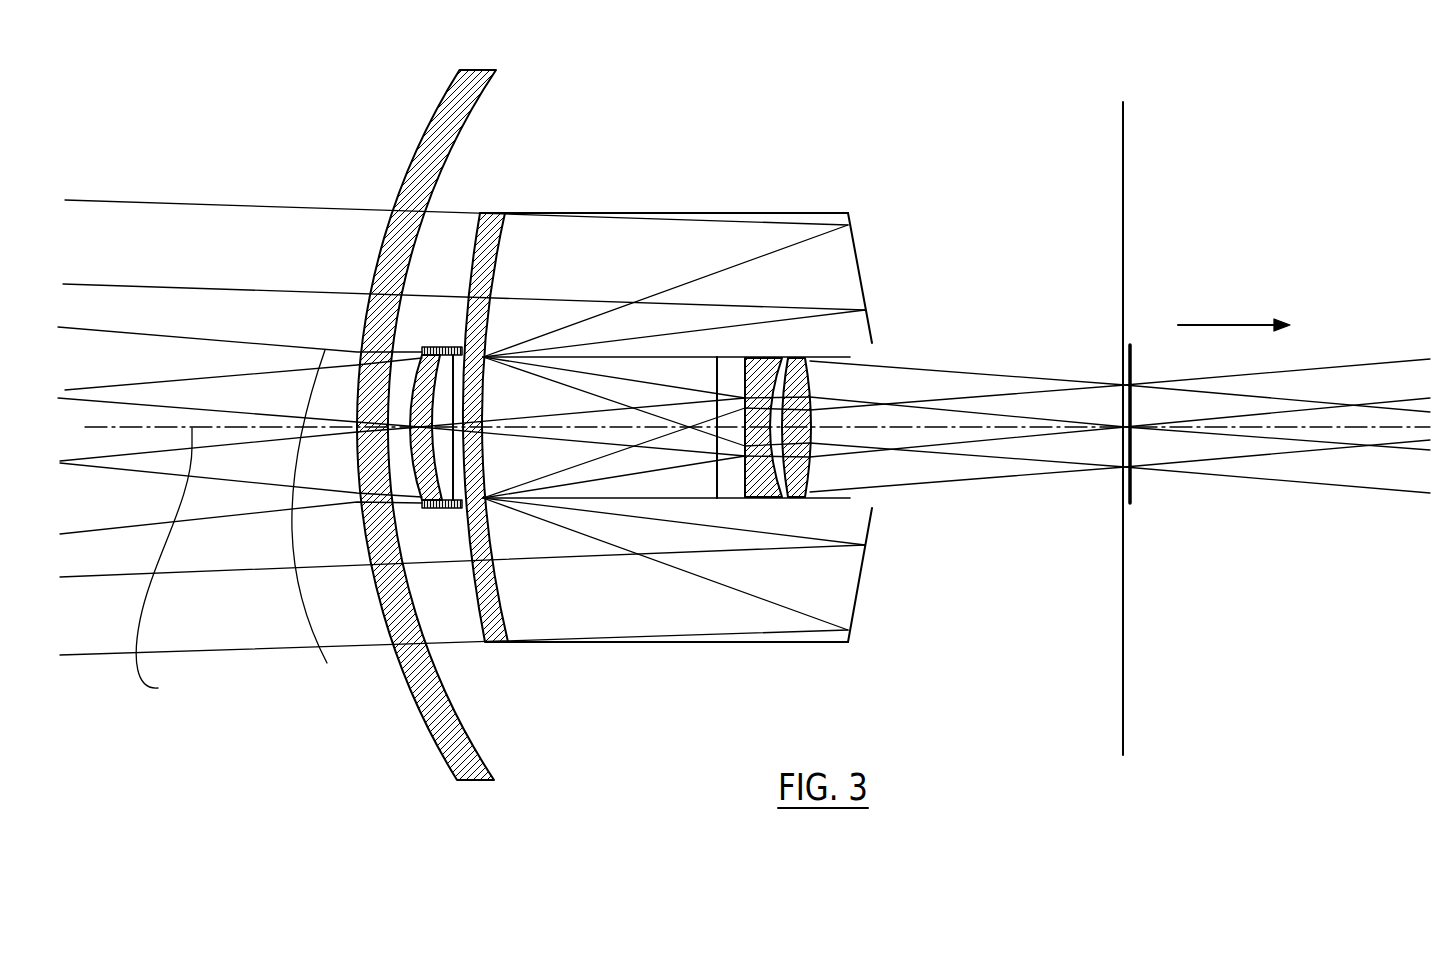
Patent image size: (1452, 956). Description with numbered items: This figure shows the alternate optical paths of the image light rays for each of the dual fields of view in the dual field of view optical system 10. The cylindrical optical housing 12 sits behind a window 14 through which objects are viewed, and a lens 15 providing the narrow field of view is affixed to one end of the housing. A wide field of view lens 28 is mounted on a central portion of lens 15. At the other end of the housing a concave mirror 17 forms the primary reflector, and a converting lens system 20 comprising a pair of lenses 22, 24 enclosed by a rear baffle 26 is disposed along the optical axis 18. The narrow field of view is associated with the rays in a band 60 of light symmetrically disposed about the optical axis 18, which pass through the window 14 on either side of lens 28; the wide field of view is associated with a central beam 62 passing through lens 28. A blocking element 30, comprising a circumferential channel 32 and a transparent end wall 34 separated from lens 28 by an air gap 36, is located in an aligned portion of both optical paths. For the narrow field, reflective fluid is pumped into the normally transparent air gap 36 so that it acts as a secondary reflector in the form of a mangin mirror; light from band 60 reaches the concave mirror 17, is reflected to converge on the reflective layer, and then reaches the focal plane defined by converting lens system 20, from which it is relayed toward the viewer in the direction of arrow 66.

The dual field of view optical system 10 is at (910, 114).
The optical housing 12 is at (621, 643).
The window 14 is at (462, 128).
The lens 15 is at (505, 242).
The concave mirror 17 is at (864, 268).
The optical axis 18 is at (164, 565).
The converting lens system 20 is at (745, 510).
The lens 22 is at (773, 496).
The lens 24 is at (800, 496).
The rear baffle 26 is at (736, 365).
The wide field of view lens 28 is at (433, 508).
The blocking element 30 is at (430, 347).
The circumferential channel 32 is at (455, 345).
The transparent end wall 34 is at (510, 640).
The air gap 36 is at (458, 383).
The band of light 60 is at (165, 287).
The central beam 62 is at (333, 508).
The arrow 66 is at (1234, 308).